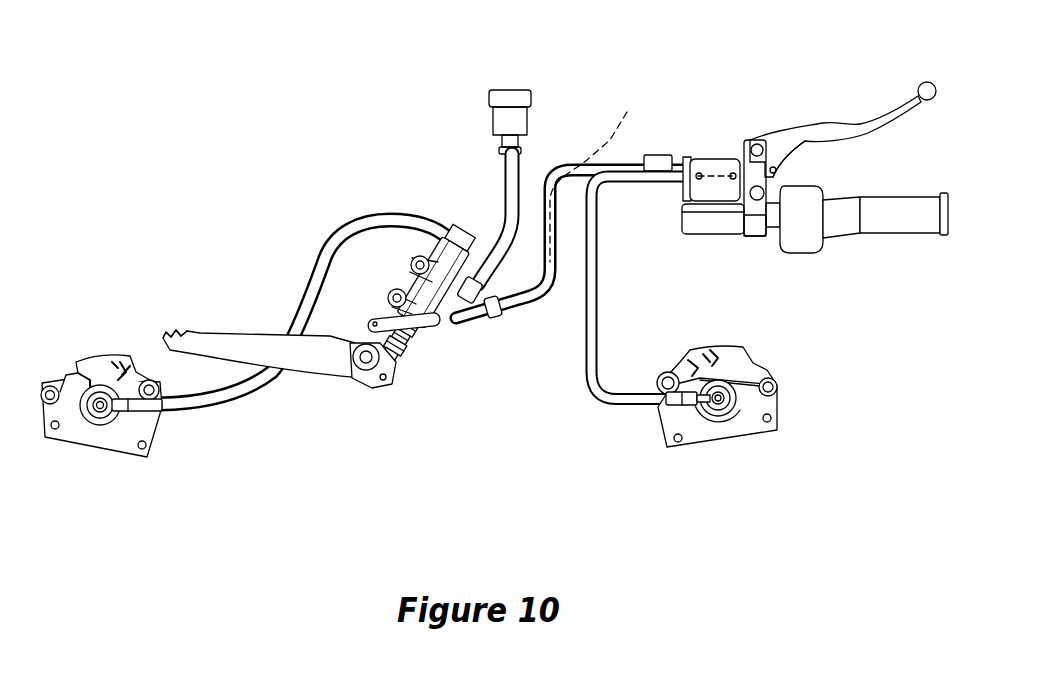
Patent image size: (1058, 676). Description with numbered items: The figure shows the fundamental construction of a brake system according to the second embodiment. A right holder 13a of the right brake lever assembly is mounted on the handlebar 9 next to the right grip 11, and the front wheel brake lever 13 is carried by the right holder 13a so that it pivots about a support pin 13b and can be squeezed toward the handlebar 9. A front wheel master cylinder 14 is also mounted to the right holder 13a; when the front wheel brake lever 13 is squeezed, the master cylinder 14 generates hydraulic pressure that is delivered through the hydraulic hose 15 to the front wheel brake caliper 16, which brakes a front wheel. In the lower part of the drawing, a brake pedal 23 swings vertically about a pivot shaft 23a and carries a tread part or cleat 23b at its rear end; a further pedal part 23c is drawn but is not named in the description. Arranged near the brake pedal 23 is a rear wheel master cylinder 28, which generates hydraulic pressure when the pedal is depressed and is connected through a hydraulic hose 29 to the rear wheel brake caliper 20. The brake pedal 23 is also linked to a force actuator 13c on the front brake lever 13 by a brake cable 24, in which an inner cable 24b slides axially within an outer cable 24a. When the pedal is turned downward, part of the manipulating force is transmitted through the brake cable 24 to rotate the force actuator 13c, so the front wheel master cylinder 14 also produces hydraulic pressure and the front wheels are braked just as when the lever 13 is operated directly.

The handlebar 9 is at (714, 236).
The right grip 11 is at (893, 222).
The front wheel brake lever 13 is at (880, 118).
The right holder 13a is at (755, 238).
The support pin 13b is at (757, 142).
The force actuator 13c is at (803, 158).
The front wheel master cylinder 14 is at (714, 158).
The hydraulic hose 15 is at (599, 290).
The front wheel brake caliper 16 is at (743, 442).
The rear wheel brake caliper 20 is at (113, 458).
The brake pedal 23 is at (296, 370).
The pivot shaft 23a is at (356, 392).
The tread part 23b is at (182, 330).
The pedal link rod 23c is at (356, 320).
The brake cable 24 is at (562, 158).
The outer cable 24a is at (547, 305).
The inner cable 24b is at (604, 171).
The rear wheel master cylinder 28 is at (424, 285).
The hydraulic hose 29 is at (335, 238).